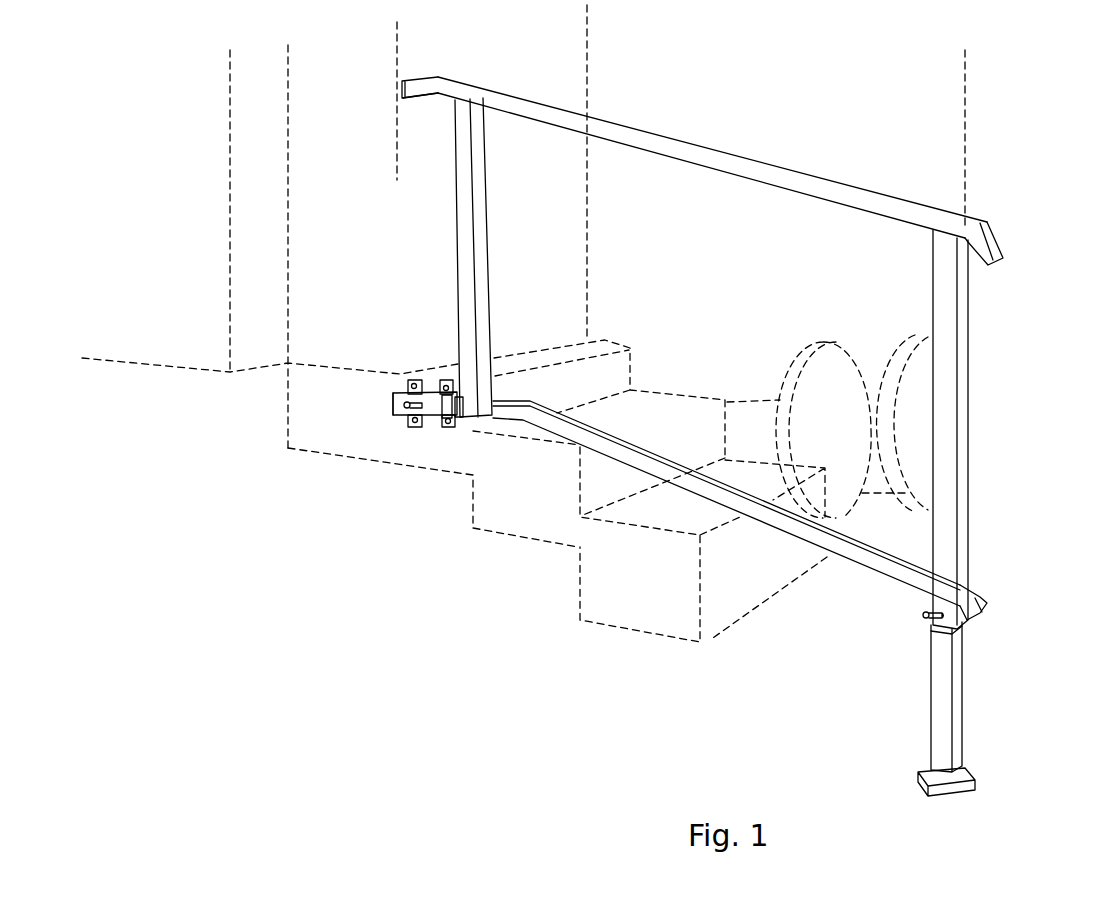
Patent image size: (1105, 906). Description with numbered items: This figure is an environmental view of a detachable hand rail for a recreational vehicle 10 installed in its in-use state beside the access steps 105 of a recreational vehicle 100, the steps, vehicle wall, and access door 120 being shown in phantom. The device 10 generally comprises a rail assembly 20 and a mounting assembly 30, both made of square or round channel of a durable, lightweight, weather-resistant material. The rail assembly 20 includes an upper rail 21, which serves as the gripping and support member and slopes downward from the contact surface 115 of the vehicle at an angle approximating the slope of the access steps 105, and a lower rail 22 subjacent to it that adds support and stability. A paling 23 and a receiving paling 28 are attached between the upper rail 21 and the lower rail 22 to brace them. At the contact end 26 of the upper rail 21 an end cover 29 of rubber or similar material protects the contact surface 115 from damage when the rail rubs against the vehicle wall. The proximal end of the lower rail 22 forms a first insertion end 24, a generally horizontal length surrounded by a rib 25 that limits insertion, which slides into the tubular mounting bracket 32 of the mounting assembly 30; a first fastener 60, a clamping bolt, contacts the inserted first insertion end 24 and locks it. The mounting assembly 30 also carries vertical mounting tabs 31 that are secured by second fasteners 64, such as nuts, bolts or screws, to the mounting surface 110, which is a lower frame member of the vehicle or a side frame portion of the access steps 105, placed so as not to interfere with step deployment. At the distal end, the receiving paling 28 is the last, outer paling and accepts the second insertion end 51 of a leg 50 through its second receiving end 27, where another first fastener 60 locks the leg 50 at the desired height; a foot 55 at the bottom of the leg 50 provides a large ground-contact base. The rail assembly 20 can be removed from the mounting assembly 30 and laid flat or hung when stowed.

The detachable hand rail for a recreational vehicle 10 is at (316, 645).
The rail assembly 20 is at (988, 355).
The upper rail 21 is at (805, 185).
The lower rail 22 is at (638, 463).
The paling 23 is at (487, 287).
The first insertion end 24 is at (463, 418).
The rib 25 is at (450, 418).
The contact end 26 is at (407, 100).
The second receiving end 27 is at (990, 610).
The receiving paling 28 is at (958, 455).
The end cover 29 is at (400, 82).
The mounting assembly 30 is at (391, 400).
The mounting tab 31 is at (408, 380).
The mounting bracket 32 is at (393, 410).
The leg 50 is at (958, 692).
The second insertion end 51 is at (965, 640).
The foot 55 is at (970, 778).
The first fastener 60 is at (407, 409).
The second fastener 64 is at (414, 380).
The recreational vehicle 100 is at (918, 98).
The access steps 105 is at (668, 614).
The mounting surface 110 is at (308, 436).
The contact surface 115 is at (330, 157).
The access door 120 is at (548, 78).